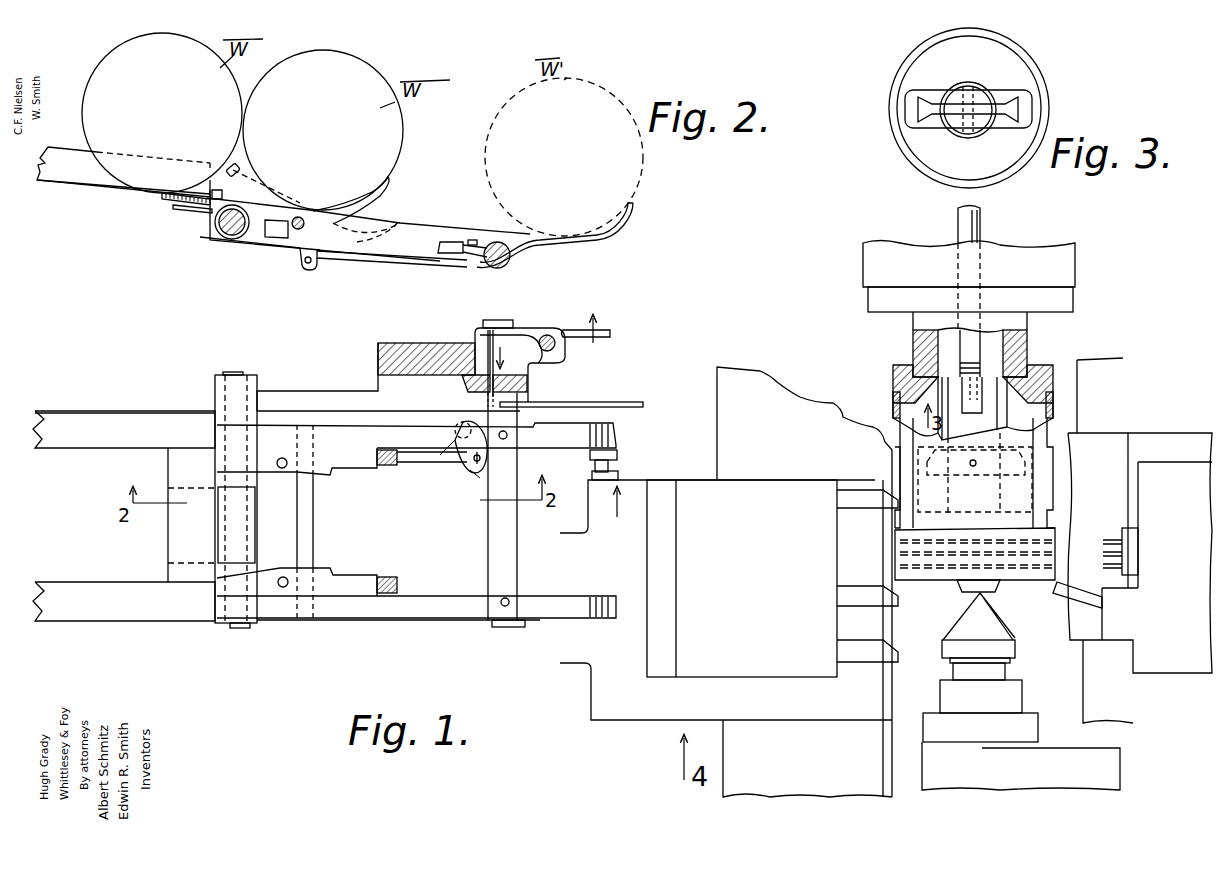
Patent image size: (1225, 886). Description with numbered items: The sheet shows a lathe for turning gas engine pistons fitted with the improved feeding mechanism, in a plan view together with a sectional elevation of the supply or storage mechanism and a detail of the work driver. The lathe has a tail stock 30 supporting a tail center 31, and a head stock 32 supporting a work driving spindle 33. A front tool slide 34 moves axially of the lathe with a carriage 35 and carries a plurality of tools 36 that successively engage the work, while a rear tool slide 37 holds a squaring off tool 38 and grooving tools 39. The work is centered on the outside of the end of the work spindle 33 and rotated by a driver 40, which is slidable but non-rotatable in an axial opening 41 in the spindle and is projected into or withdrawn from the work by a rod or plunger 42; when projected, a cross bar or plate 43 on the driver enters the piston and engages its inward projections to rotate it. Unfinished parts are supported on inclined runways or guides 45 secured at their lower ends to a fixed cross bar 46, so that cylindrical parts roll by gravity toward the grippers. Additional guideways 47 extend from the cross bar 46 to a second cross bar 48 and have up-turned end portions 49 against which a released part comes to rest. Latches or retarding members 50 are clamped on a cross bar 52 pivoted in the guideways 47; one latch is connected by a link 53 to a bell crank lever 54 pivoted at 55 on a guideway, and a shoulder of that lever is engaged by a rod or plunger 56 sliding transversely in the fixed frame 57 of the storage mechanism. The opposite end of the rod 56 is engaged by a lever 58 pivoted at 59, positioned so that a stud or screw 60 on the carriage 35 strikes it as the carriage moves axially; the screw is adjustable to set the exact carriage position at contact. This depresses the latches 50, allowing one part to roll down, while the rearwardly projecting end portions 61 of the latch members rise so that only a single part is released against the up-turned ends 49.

In FIG. 1, the tail stock 30 is at (1106, 775).
In FIG. 1, the tail center 31 is at (962, 615).
In FIG. 1, the head stock 32 is at (1077, 264).
In FIG. 3, the work driving spindle 33 is at (930, 65).
In FIG. 1, the work driving spindle 33 is at (1022, 326).
In FIG. 1, the front tool slide 34 is at (786, 668).
In FIG. 1, the carriage 35 is at (795, 401).
In FIG. 1, the tools 36 is at (863, 500).
In FIG. 1, the rear tool slide 37 is at (1188, 636).
In FIG. 1, the squaring off tool 38 is at (1058, 588).
In FIG. 1, the grooving tools 39 is at (1110, 540).
In FIG. 3, the driver 40 is at (978, 97).
In FIG. 1, the driver 40 is at (993, 386).
In FIG. 1, the axial opening 41 is at (947, 348).
In FIG. 1, the rod or plunger 42 is at (976, 223).
In FIG. 3, the cross bar or plate 43 is at (918, 110).
In FIG. 1, the cross bar or plate 43 is at (1000, 471).
In FIG. 2, the runways or guides 45 is at (93, 188).
In FIG. 1, the runways or guides 45 is at (73, 430).
In FIG. 2, the fixed cross bar 46 is at (212, 227).
In FIG. 1, the fixed cross bar 46 is at (240, 628).
In FIG. 2, the guideways 47 is at (253, 237).
In FIG. 1, the guideways 47 is at (348, 430).
In FIG. 2, the second cross bar 48 is at (511, 258).
In FIG. 1, the second cross bar 48 is at (497, 544).
In FIG. 2, the up-turned end portions 49 is at (613, 231).
In FIG. 1, the up-turned end portions 49 is at (600, 595).
In FIG. 2, the latches or retarding members 50 is at (357, 192).
In FIG. 1, the latches or retarding members 50 is at (378, 468).
In FIG. 2, the cross bar 52 is at (297, 233).
In FIG. 1, the cross bar 52 is at (312, 522).
In FIG. 2, the link 53 is at (370, 262).
In FIG. 1, the link 53 is at (422, 521).
In FIG. 2, the bell crank lever 54 is at (482, 267).
In FIG. 1, the bell crank lever 54 is at (466, 468).
In FIG. 1, the pivot 55 is at (455, 433).
In FIG. 1, the rod or plunger 56 is at (487, 360).
In FIG. 1, the fixed frame 57 is at (528, 385).
In FIG. 1, the lever 58 is at (605, 337).
In FIG. 1, the pivot 59 is at (553, 348).
In FIG. 1, the stud or screw 60 is at (618, 455).
In FIG. 2, the rearwardly projecting end portions 61 is at (238, 170).
In FIG. 1, the rearwardly projecting end portions 61 is at (222, 462).